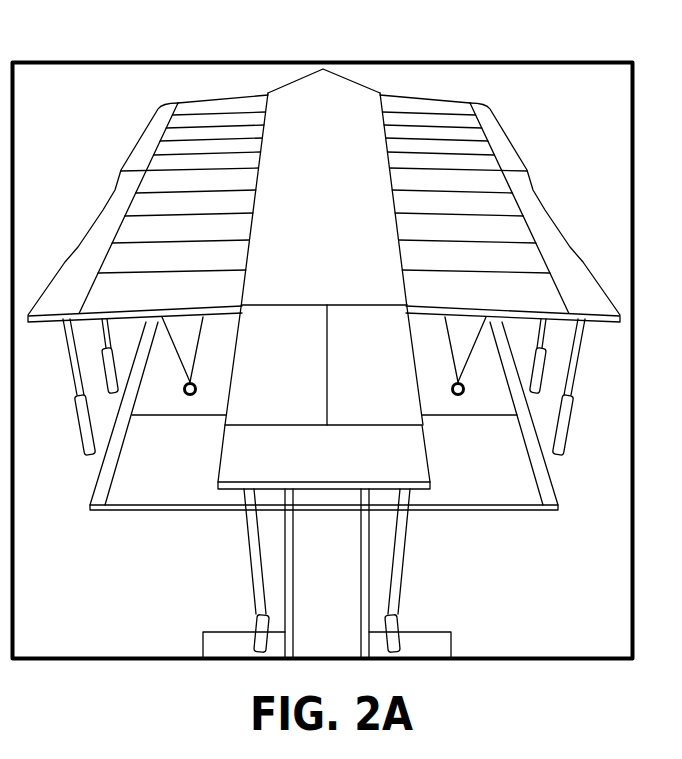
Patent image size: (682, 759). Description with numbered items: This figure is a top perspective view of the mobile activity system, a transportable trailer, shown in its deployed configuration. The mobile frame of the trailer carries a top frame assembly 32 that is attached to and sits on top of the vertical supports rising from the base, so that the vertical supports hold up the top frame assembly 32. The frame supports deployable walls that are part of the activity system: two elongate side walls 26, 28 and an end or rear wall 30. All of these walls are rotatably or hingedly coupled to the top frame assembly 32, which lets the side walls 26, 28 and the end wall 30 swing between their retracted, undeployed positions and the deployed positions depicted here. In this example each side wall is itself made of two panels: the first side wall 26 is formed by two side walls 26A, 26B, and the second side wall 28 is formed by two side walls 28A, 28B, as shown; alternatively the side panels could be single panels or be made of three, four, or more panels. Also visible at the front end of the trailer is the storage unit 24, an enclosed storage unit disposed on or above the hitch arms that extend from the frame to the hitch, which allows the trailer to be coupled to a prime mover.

The storage unit 24 is at (328, 90).
The first side wall 26 is at (95, 146).
The side wall 26A is at (180, 132).
The side wall 26B is at (125, 252).
The second side wall 28 is at (555, 146).
The side wall 28A is at (468, 132).
The side wall 28B is at (523, 252).
The end wall 30 is at (395, 392).
The top frame assembly 32 is at (273, 284).